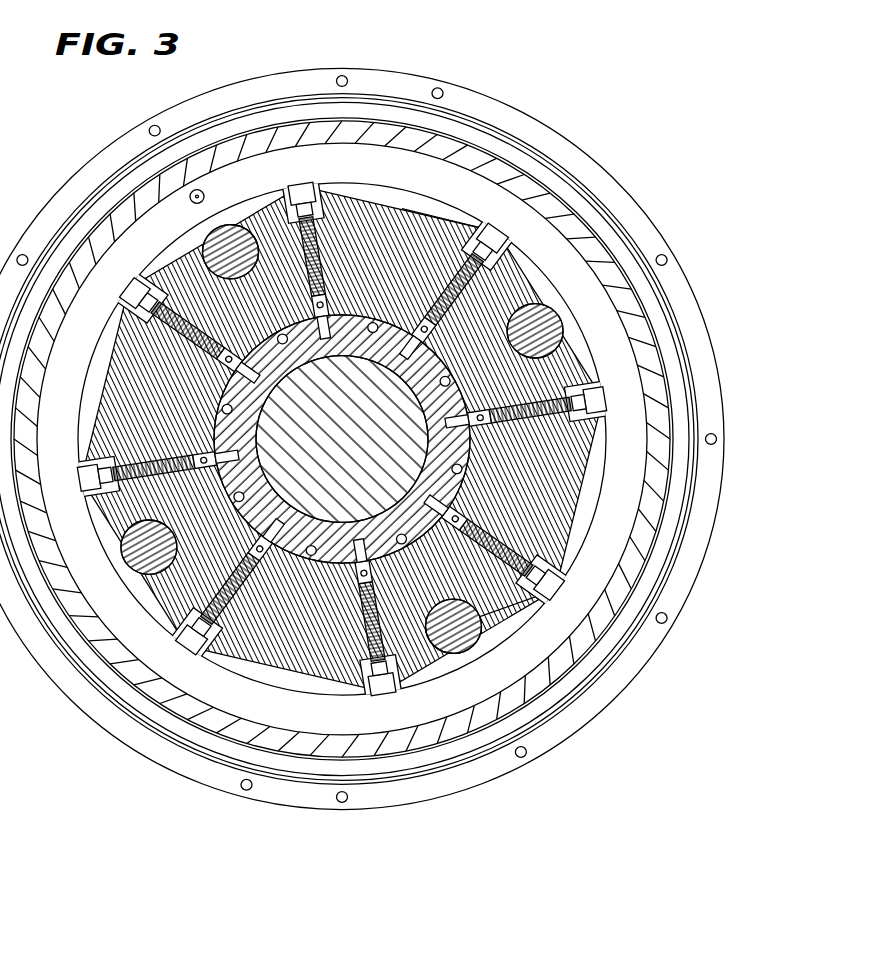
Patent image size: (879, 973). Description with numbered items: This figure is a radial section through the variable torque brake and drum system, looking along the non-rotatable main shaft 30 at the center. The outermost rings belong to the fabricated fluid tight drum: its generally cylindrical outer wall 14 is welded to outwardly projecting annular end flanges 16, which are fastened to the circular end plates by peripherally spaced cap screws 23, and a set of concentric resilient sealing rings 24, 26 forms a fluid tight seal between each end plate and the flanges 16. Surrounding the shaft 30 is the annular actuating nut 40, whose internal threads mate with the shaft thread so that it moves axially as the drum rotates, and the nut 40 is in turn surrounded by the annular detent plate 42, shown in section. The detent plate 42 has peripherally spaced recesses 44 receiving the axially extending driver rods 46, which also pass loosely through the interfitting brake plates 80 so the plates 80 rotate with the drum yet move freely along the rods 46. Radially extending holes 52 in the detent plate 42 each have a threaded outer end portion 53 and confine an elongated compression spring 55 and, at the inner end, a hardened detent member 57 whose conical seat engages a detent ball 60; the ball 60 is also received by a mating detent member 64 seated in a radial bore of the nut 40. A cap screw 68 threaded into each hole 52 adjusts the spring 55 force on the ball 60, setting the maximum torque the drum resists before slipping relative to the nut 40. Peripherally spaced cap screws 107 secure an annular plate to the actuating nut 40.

The outer wall 14 is at (380, 439).
The end flanges 16 is at (60, 372).
The cap screws 23 is at (330, 187).
The sealing ring 24 is at (136, 312).
The sealing ring 26 is at (321, 135).
The main shaft 30 is at (342, 439).
The actuating nut 40 is at (342, 439).
The detent plate 42 is at (341, 421).
The recesses 44 is at (338, 452).
The driver rods 46 is at (406, 462).
The radial holes 52 is at (337, 439).
The threaded outer end portion 53 is at (366, 451).
The compression spring 55 is at (324, 436).
The detent member 57 is at (418, 439).
The detent ball 60 is at (341, 439).
The detent member 64 is at (342, 439).
The cap screw 68 is at (408, 409).
The brake plates 80 is at (480, 367).
The cap screws 107 is at (342, 528).